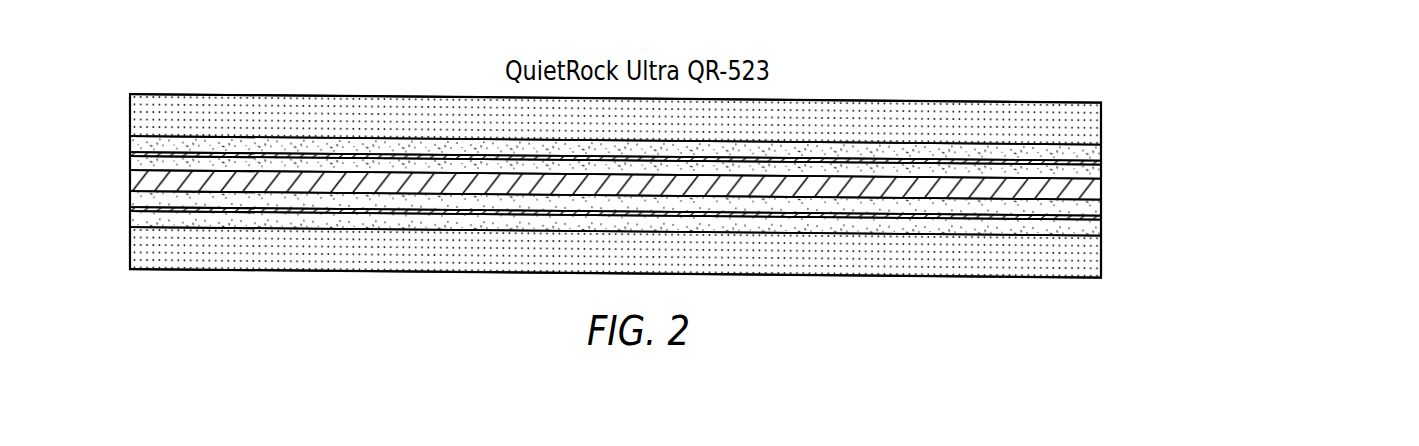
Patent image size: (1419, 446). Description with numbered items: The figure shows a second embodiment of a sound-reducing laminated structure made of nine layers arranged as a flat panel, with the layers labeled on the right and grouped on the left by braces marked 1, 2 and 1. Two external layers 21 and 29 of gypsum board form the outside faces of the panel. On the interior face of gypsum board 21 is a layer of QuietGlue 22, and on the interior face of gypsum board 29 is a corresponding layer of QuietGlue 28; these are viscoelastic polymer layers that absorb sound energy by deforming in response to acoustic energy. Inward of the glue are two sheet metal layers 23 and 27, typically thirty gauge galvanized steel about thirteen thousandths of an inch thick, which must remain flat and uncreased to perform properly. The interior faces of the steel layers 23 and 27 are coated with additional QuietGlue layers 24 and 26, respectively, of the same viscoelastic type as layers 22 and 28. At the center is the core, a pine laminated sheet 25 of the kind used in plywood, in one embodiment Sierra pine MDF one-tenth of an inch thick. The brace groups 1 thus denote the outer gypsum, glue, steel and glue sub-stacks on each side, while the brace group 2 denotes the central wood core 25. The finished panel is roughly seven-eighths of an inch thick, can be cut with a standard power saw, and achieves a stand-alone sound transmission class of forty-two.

The gypsum board / glue / steel sub-assembly 1 is at (118, 94).
The MDF core sub-assembly 2 is at (118, 158).
The external layer of gypsum board 21 is at (1093, 127).
The layer of QuietGlue 22 is at (1100, 150).
The sheet metal layer 23 is at (1100, 160).
The layer of QuietGlue 24 is at (1098, 168).
The pine laminated sheet 25 is at (1093, 188).
The layer of QuietGlue 26 is at (1098, 207).
The sheet metal layer 27 is at (1098, 218).
The layer of QuietGlue 28 is at (1098, 228).
The external layer of gypsum board 29 is at (1093, 255).